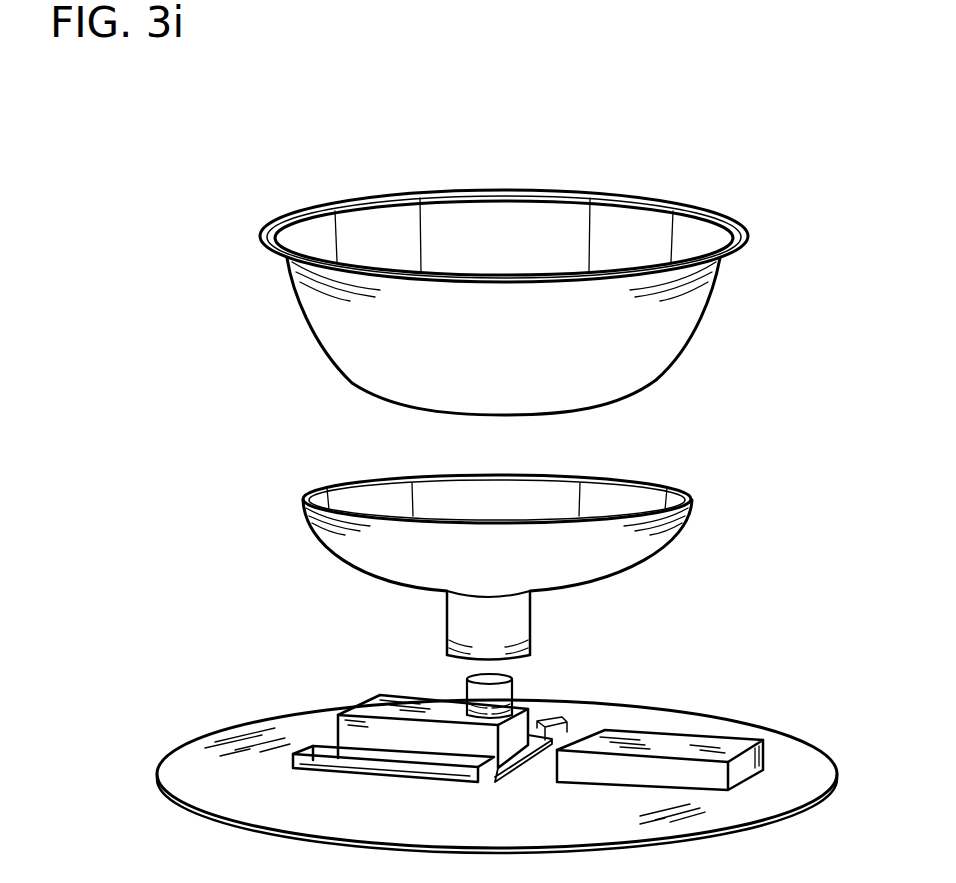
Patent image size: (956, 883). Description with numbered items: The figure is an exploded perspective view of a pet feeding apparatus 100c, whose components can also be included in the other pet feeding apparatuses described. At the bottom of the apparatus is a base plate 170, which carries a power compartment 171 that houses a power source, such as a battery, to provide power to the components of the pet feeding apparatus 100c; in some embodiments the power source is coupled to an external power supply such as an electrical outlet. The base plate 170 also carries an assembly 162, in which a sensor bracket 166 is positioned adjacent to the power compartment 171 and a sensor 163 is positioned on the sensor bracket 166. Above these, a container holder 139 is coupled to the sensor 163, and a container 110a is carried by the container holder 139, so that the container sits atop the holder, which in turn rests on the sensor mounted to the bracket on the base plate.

The pet feeding apparatus 100c is at (140, 156).
The container 110a is at (237, 291).
The container holder 139 is at (268, 532).
The base plate 170 is at (128, 743).
The sensor bracket 166 is at (277, 704).
The assembly 162 is at (345, 818).
The sensor 163 is at (572, 692).
The power compartment 171 is at (667, 741).